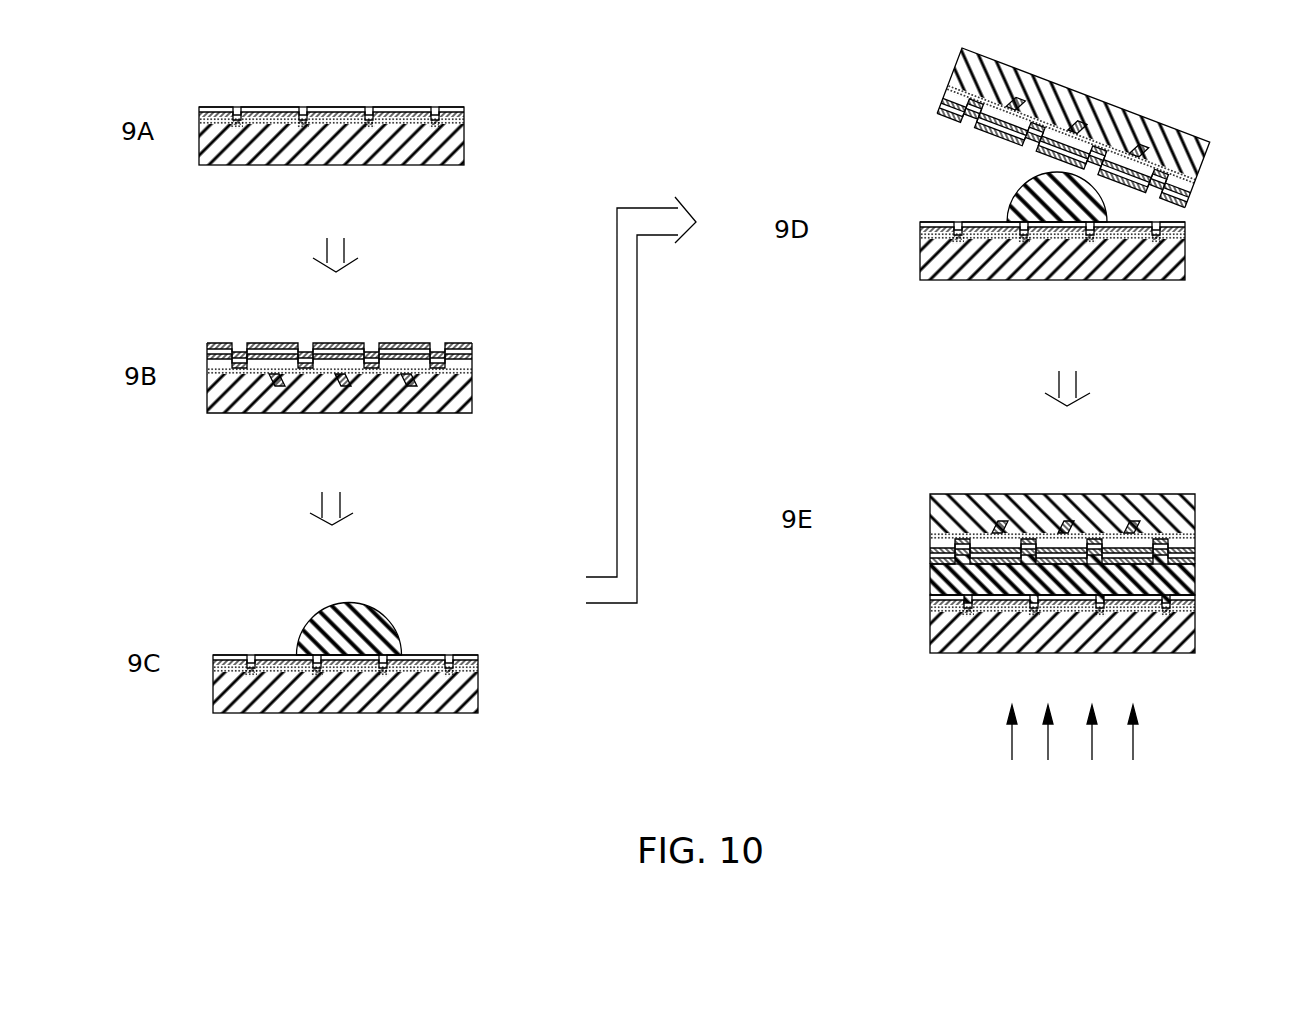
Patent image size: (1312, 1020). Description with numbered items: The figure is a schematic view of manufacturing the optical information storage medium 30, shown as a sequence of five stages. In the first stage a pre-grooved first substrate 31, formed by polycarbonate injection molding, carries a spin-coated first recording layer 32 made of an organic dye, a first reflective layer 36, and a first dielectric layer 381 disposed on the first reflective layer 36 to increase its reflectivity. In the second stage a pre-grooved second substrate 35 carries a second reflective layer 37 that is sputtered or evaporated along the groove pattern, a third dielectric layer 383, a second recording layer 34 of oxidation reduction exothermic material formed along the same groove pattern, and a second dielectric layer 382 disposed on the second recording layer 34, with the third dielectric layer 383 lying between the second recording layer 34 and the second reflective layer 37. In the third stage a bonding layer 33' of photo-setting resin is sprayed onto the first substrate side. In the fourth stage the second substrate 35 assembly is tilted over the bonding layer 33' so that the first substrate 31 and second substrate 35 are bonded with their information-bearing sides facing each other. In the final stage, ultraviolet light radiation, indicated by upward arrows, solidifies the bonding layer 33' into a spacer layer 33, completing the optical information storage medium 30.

The optical information storage medium 30 is at (918, 452).
The first substrate 31 is at (465, 138).
The first recording layer 32 is at (465, 121).
The spacer layer 33 is at (1027, 579).
The bonding layer 33' is at (677, 413).
The second recording layer 34 is at (470, 352).
The second substrate 35 is at (470, 398).
The first reflective layer 36 is at (465, 113).
The second reflective layer 37 is at (470, 367).
The first dielectric layer 381 is at (466, 108).
The second dielectric layer 382 is at (470, 345).
The third dielectric layer 383 is at (470, 359).